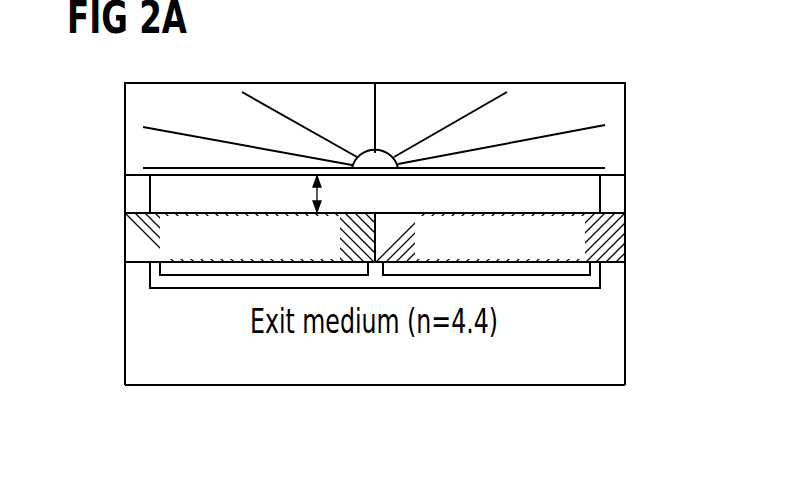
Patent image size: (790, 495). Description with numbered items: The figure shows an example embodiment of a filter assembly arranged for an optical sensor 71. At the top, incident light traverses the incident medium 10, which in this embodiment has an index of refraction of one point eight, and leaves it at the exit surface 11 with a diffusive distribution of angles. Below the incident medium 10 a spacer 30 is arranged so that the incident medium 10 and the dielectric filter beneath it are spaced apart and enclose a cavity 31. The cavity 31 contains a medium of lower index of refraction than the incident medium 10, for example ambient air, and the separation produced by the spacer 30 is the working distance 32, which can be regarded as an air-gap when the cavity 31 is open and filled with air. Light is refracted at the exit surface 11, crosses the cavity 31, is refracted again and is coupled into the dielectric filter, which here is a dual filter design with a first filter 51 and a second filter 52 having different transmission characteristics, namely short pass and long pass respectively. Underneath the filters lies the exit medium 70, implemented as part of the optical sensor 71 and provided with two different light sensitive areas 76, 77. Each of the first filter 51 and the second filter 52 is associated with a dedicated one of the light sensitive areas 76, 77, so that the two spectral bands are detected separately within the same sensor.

The incident medium 10 is at (615, 129).
The exit surface 11 is at (572, 176).
The spacer 30 is at (133, 195).
The cavity 31 is at (168, 187).
The working distance 32 is at (310, 195).
The first filter 51 is at (128, 237).
The second filter 52 is at (625, 242).
The exit medium 70 is at (132, 323).
The optical sensor 71 is at (373, 386).
The light sensitive area 76 is at (210, 268).
The light sensitive area 77 is at (532, 268).